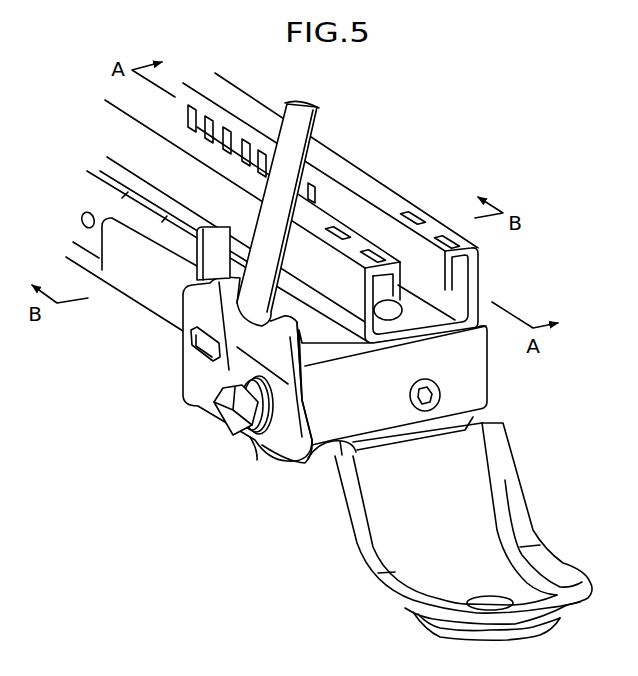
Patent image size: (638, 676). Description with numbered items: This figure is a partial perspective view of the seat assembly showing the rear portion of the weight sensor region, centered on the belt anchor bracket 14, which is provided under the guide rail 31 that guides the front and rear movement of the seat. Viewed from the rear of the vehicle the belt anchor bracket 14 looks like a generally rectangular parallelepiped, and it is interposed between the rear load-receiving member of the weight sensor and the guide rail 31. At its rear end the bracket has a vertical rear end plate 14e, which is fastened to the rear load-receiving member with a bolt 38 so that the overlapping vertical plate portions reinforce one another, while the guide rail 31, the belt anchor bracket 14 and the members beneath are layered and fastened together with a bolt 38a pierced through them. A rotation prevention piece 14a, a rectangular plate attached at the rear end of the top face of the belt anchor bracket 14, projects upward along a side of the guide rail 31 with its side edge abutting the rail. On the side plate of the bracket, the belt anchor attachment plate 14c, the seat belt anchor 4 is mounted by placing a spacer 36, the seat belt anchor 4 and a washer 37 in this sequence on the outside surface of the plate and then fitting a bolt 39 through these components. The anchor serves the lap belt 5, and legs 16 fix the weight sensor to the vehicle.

The seat belt anchor 4 is at (213, 402).
The lap belt 5 is at (288, 103).
The belt anchor bracket 14 is at (345, 375).
The rotation prevention piece 14a is at (212, 263).
The belt anchor attachment plate 14c is at (193, 370).
The rear end plate 14e is at (313, 453).
The leg 16 is at (517, 508).
The guide rail 31 is at (315, 208).
The spacer 36 is at (255, 460).
The washer 37 is at (262, 444).
The bolt 38 is at (438, 390).
The bolt 38a is at (403, 314).
The bolt 39 is at (210, 417).